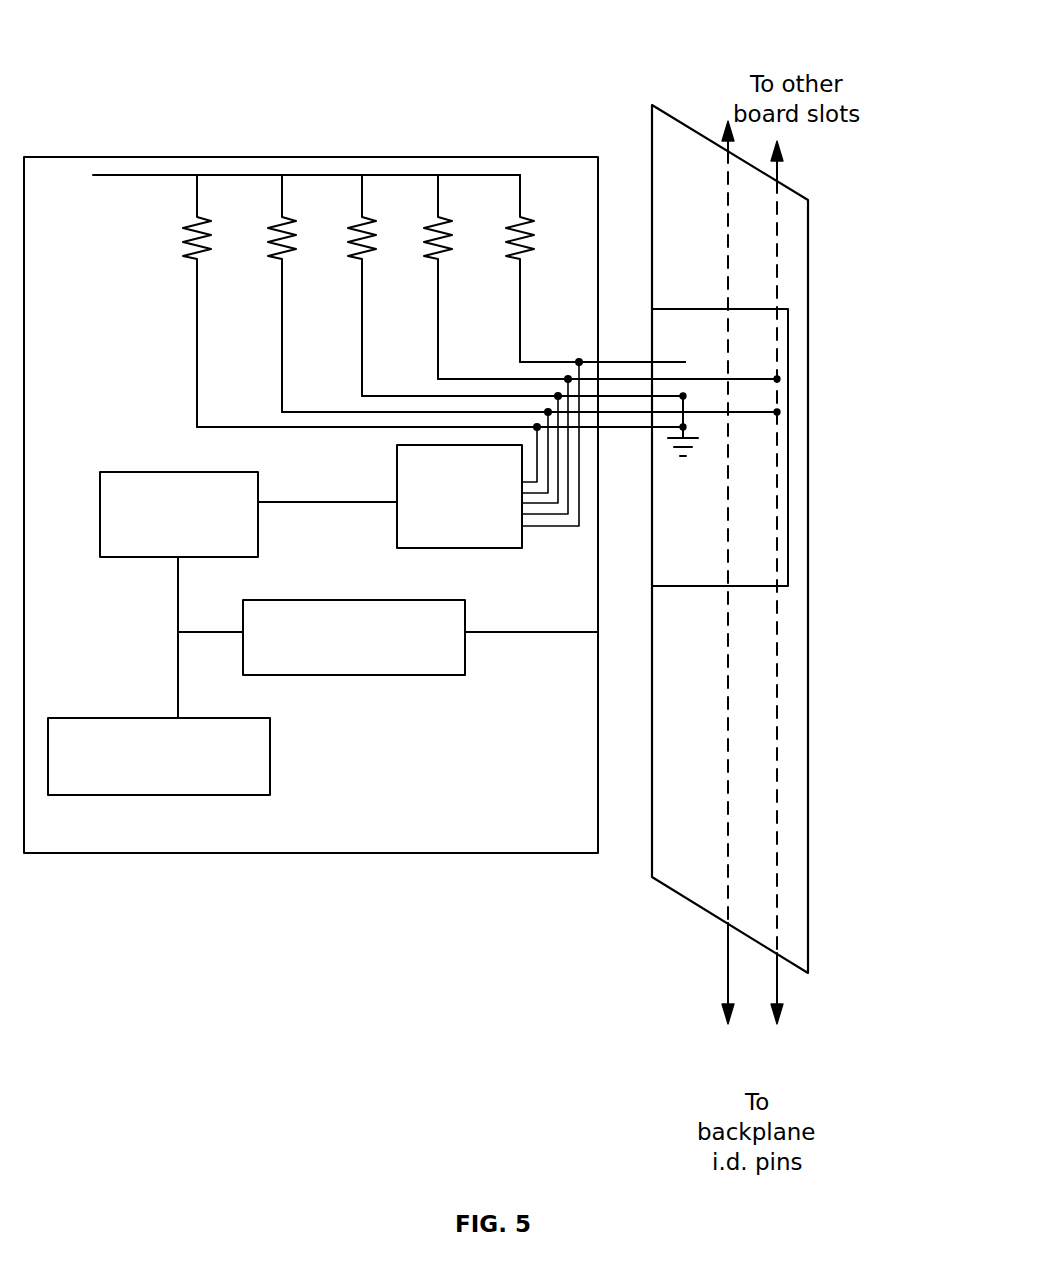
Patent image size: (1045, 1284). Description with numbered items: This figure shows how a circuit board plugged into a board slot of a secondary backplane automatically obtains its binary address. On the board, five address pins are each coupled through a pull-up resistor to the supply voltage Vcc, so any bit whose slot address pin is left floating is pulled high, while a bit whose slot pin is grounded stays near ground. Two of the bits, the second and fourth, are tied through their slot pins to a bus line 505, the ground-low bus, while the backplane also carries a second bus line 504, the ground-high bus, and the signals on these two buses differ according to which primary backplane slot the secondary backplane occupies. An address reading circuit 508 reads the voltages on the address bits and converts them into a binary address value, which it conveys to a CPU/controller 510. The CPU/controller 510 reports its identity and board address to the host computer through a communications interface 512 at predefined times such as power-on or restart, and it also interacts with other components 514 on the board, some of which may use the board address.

The CPU/controller 510 is at (128, 472).
The address reading circuit 508 is at (397, 490).
The communications interface 512 is at (388, 600).
The other components 514 is at (155, 718).
The bus line 504 is at (722, 968).
The ground low bus line 505 is at (780, 970).